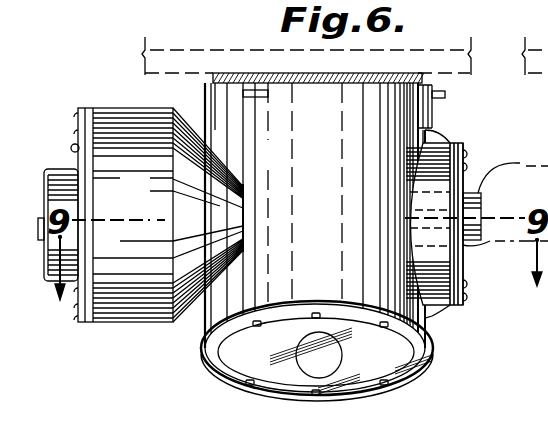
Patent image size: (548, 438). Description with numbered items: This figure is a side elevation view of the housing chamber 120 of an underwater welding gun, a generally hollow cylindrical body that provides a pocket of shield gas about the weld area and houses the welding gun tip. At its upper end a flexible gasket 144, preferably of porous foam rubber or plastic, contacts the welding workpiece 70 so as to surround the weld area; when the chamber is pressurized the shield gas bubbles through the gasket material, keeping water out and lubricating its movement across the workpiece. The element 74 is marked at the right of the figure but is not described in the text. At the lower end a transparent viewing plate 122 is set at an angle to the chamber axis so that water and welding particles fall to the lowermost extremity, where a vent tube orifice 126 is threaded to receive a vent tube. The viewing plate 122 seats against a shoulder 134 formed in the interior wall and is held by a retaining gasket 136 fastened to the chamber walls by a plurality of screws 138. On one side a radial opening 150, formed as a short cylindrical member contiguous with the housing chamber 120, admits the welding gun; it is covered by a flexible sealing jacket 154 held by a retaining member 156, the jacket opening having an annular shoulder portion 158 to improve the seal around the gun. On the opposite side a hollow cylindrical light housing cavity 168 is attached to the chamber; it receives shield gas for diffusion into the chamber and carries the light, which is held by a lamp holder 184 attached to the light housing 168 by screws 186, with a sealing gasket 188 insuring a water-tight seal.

The welding workpiece 70 is at (417, 62).
The drive shaft 74 is at (513, 162).
The housing chamber 120 is at (416, 110).
The transparent viewing plate 122 is at (411, 372).
The vent tube orifice 126 is at (316, 394).
The shoulder 134 is at (250, 382).
The retaining gasket 136 is at (431, 362).
The screws 138 is at (383, 386).
The flexible gasket 144 is at (240, 78).
The radial opening 150 is at (447, 140).
The flexible sealing jacket 154 is at (445, 300).
The retaining member 156 is at (467, 277).
The annular shoulder portion 158 is at (466, 243).
The light housing cavity 168 is at (150, 323).
The lamp holder 184 is at (58, 335).
The screws 186 is at (72, 147).
The sealing gasket 188 is at (90, 322).